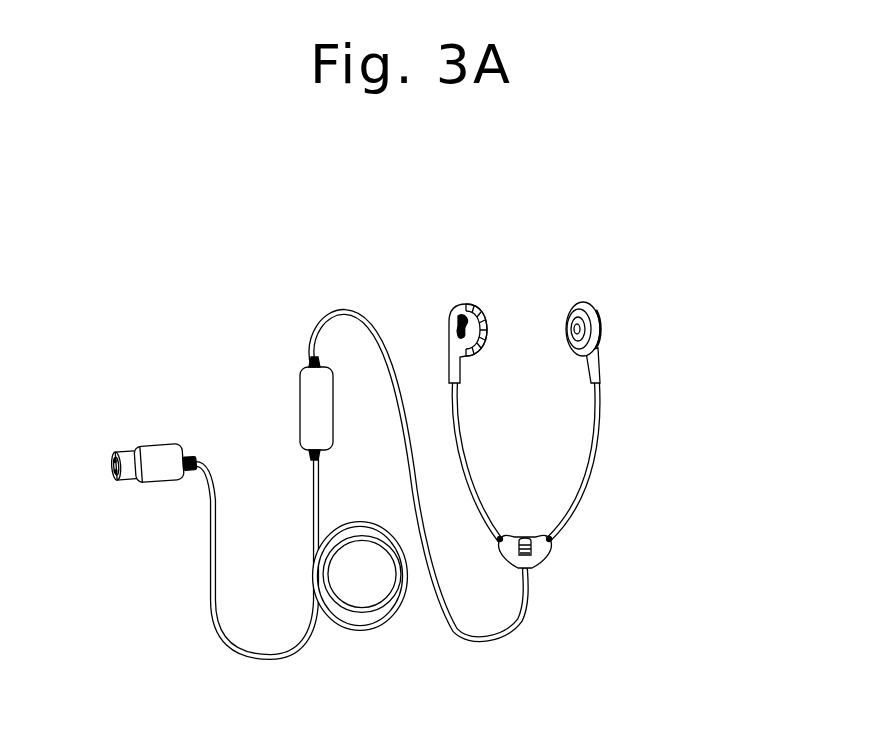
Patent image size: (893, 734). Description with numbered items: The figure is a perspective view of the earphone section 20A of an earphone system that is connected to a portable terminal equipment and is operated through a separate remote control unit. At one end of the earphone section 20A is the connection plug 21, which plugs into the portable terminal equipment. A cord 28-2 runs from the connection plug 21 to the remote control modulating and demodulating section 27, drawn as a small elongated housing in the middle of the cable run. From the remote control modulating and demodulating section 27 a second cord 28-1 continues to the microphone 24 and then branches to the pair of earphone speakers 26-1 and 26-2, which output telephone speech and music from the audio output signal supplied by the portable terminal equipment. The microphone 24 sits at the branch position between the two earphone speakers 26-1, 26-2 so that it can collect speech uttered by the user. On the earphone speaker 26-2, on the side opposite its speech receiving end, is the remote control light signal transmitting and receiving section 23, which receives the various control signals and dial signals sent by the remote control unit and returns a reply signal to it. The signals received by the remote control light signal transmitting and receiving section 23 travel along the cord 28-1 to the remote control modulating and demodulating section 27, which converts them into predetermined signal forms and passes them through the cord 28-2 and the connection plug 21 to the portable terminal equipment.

The earphone section 20A is at (258, 383).
The connection plug 21 is at (167, 451).
The remote control light signal transmitting and receiving section 23 is at (462, 303).
The microphone 24 is at (528, 538).
The earphone speaker 26-1 is at (577, 309).
The earphone speaker 26-2 is at (484, 304).
The remote control modulating and demodulating section 27 is at (300, 390).
The cord 28-1 is at (452, 624).
The cord 28-2 is at (211, 557).